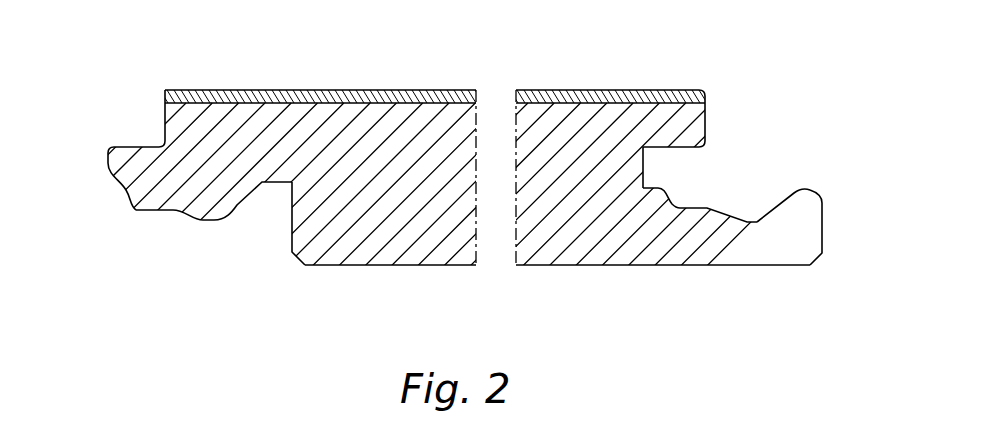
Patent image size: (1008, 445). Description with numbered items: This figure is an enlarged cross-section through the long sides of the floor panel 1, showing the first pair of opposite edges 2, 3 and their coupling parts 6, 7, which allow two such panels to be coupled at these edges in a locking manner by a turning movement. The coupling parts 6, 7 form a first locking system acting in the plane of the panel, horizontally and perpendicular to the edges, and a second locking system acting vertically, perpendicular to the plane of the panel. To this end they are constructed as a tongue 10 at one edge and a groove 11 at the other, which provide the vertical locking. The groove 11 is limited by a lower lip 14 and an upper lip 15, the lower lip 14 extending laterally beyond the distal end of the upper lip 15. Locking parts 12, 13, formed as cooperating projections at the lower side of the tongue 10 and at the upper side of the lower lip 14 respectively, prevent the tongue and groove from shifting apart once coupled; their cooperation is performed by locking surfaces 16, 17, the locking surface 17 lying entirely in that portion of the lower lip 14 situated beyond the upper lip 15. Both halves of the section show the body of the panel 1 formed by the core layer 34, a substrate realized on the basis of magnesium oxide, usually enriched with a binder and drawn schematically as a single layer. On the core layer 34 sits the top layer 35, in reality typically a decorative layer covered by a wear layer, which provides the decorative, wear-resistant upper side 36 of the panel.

The panel 1 is at (218, 264).
The first edge of the first pair of opposite edges 2 is at (136, 131).
The second edge of the first pair of opposite edges 3 is at (790, 117).
The coupling part 6 is at (134, 223).
The coupling part 7 is at (794, 155).
The tongue 10 is at (117, 167).
The groove 11 is at (660, 170).
The locking part 12 is at (223, 203).
The locking part 13 is at (802, 210).
The lower lip 14 is at (675, 235).
The upper lip 15 is at (687, 122).
The locking surface 16 is at (238, 205).
The locking surface 17 is at (780, 206).
The core layer 34 is at (383, 210).
The top layer 35 is at (383, 90).
The decorative upper side 36 is at (570, 90).